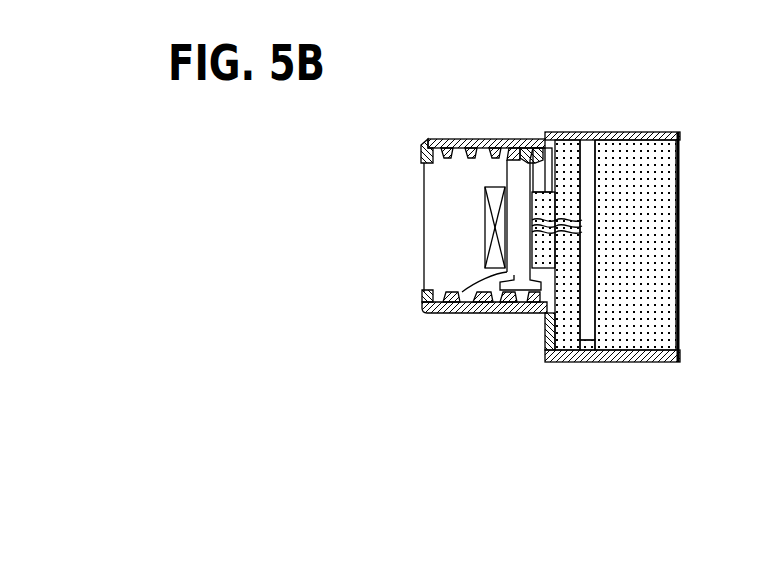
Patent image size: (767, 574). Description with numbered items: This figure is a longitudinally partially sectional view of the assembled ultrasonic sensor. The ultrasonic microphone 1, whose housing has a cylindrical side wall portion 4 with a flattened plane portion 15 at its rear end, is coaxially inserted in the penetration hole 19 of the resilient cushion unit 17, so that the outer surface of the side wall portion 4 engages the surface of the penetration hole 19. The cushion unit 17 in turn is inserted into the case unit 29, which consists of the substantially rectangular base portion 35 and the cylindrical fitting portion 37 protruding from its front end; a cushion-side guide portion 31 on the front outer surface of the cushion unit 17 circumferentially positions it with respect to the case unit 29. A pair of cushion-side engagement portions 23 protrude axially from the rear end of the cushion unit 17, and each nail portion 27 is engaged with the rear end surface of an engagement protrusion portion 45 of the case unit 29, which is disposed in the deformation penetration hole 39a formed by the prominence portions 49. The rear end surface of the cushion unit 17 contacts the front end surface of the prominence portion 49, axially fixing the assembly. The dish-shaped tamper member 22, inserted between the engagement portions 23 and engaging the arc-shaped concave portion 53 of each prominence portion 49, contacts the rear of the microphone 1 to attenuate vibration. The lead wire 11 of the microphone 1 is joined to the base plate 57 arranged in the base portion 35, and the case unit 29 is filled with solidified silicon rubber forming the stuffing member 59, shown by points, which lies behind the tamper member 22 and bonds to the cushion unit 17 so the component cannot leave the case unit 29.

The ultrasonic microphone 1 is at (453, 202).
The side wall portion 4 is at (433, 257).
The lead wire 11 is at (560, 207).
The plane portion 15 is at (430, 313).
The cushion unit 17 is at (473, 138).
The penetration hole 19 is at (422, 172).
The tamper member 22 is at (556, 350).
The cushion-side engagement portion 23 is at (530, 140).
The nail portion 27 is at (563, 138).
The case unit 29 is at (557, 142).
The cushion-side guide portion 31 is at (430, 138).
The base portion 35 is at (660, 132).
The fitting portion 37 is at (460, 138).
The deformation penetration hole 39a is at (545, 187).
The engagement protrusion portion 45 is at (517, 138).
The prominence portion 49 is at (585, 280).
The concave portion 53 is at (552, 277).
The base plate 57 is at (593, 250).
The stuffing member 59 is at (658, 322).